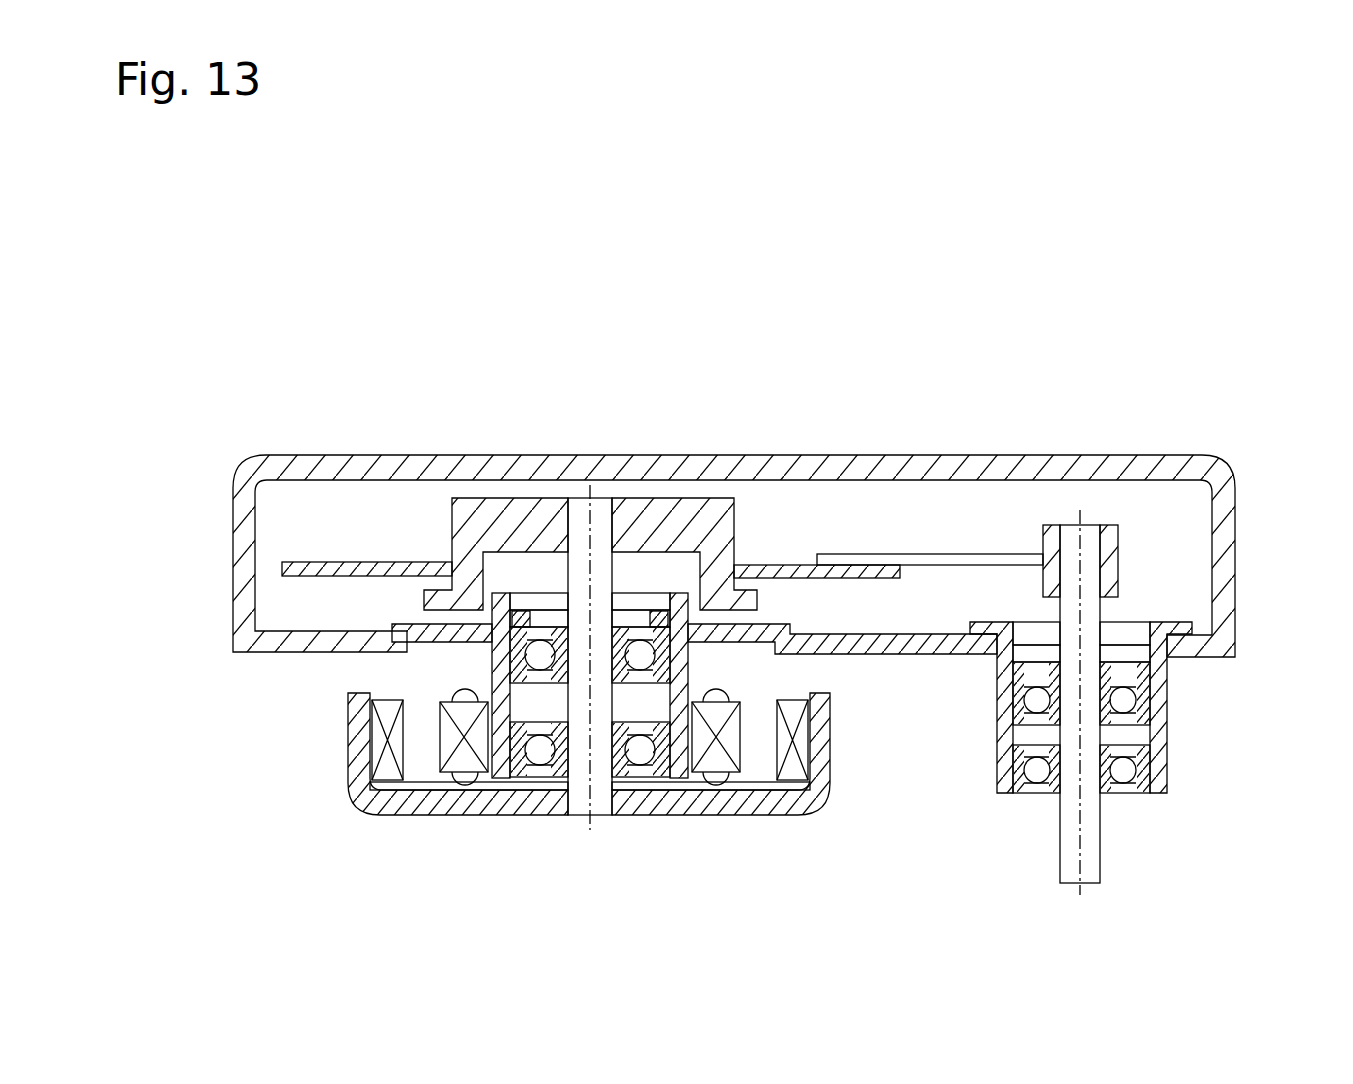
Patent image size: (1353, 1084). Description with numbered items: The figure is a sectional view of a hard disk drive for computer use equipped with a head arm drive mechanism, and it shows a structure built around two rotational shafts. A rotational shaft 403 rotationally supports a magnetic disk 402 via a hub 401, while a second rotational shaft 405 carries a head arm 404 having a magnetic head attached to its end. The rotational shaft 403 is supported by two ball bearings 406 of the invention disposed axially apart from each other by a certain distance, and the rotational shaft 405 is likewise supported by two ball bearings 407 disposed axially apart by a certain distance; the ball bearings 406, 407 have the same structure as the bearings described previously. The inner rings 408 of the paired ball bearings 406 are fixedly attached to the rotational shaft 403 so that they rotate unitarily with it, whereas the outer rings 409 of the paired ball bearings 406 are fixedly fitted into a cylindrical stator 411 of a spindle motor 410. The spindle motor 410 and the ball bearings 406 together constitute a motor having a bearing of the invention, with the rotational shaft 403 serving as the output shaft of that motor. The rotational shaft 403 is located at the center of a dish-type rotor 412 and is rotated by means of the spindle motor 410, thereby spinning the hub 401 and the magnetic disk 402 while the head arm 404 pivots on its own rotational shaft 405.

The hub 401 is at (661, 512).
The magnetic disk 402 is at (803, 565).
The rotational shaft 403 is at (583, 512).
The head arm 404 is at (906, 554).
The rotational shaft 405 is at (1078, 540).
The ball bearings 406 is at (642, 616).
The ball bearings 407 is at (1145, 765).
The inner rings 408 is at (615, 724).
The outer rings 409 is at (493, 656).
The spindle motor 410 is at (450, 790).
The cylindrical stator 411 is at (698, 788).
The dish-type rotor 412 is at (358, 748).